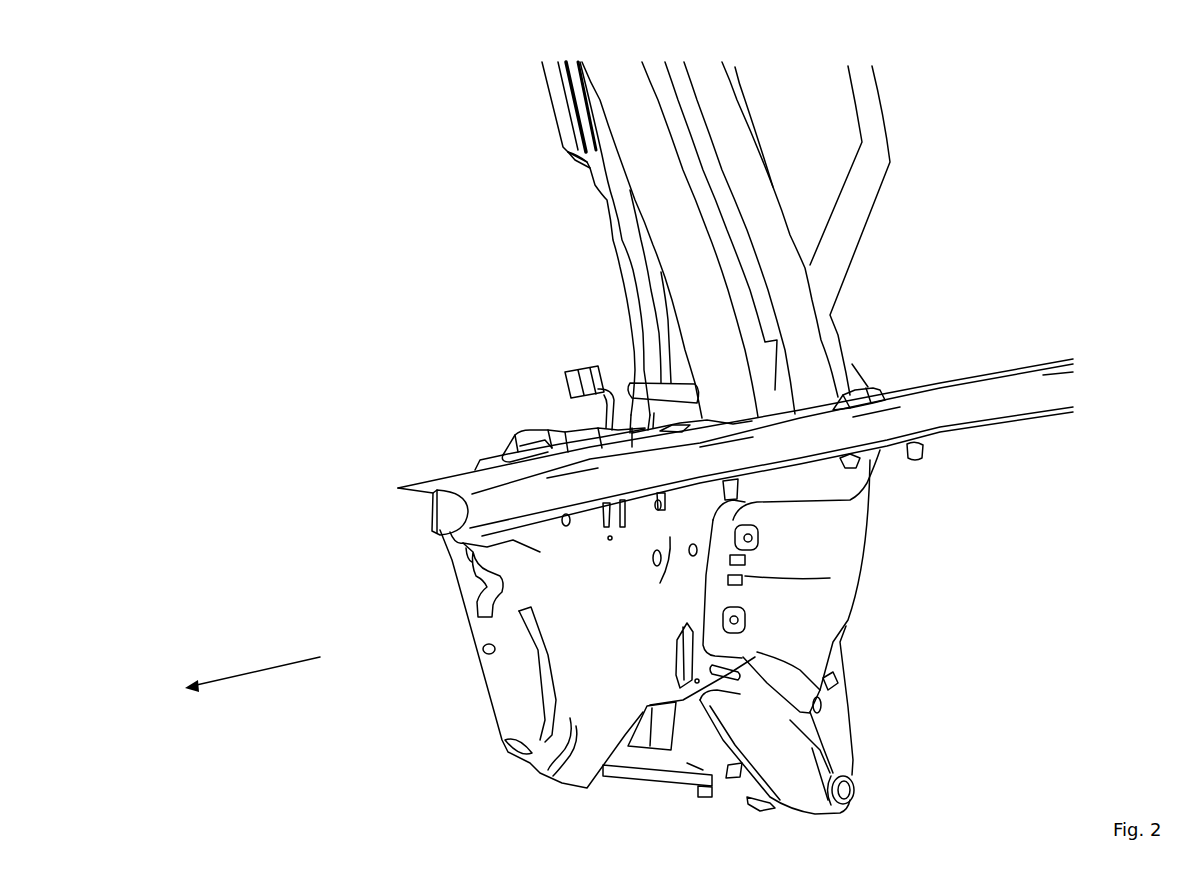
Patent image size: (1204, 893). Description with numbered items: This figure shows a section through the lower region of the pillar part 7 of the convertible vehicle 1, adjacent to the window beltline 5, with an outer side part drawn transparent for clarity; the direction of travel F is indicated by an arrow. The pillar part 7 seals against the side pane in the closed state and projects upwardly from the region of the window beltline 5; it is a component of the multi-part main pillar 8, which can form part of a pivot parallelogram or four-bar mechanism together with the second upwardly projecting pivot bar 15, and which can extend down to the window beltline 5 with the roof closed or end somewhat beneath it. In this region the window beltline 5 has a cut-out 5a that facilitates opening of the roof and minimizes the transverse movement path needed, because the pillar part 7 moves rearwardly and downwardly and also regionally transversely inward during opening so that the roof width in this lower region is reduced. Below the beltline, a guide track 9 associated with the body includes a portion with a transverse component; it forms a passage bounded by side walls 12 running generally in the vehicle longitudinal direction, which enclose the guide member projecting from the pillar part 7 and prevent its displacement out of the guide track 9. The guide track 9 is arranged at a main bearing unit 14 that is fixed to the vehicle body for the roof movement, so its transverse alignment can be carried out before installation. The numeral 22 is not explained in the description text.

The convertible vehicle 1 is at (1035, 91).
The window beltline 5 is at (958, 405).
The cut-out 5a is at (870, 388).
The pillar part 7 is at (700, 316).
The main pillar 8 is at (802, 313).
The guide track 9 is at (870, 540).
The side walls 12 is at (852, 602).
The main bearing unit 14 is at (631, 634).
The second upwardly projecting pivot bar 15 is at (612, 200).
The seal strip 22 is at (540, 115).
The direction of travel F is at (228, 677).